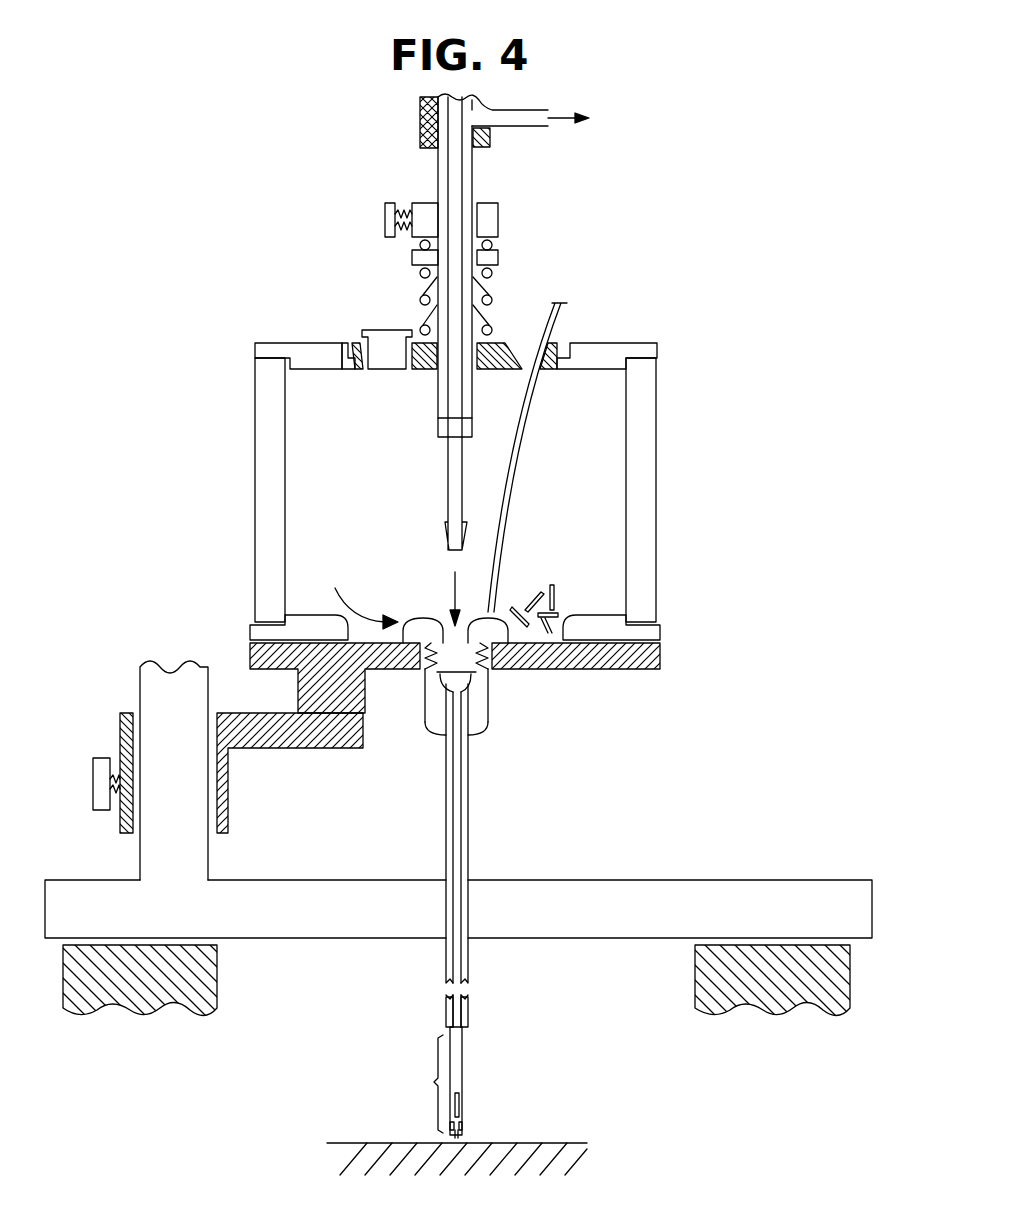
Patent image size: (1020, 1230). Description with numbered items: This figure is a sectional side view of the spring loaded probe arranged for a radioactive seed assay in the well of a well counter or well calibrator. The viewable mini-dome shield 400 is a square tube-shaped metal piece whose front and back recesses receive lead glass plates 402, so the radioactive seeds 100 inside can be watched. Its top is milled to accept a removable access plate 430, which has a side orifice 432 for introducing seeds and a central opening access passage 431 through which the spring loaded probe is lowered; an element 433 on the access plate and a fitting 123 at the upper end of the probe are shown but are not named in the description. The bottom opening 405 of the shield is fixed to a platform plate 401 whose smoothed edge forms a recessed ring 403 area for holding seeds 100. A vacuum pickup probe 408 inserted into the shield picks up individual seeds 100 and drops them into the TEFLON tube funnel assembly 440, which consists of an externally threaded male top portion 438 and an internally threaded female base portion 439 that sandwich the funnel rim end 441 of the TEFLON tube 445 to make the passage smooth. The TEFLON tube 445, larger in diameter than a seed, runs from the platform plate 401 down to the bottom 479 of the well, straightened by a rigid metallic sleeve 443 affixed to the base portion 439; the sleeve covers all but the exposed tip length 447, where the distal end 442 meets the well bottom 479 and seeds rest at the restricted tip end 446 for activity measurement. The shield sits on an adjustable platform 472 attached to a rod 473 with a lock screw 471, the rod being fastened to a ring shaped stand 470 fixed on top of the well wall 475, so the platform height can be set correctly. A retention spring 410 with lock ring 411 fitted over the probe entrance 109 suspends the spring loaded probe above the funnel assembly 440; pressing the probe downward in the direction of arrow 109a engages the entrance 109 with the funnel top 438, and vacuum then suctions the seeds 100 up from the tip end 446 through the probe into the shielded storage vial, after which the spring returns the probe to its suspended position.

The gas outlet fitting 123 is at (490, 136).
The lock ring 411 is at (498, 218).
The retention spring 410 is at (491, 272).
The cup 433 is at (390, 330).
The side orifice 432 is at (356, 343).
The removable access plate 430 is at (348, 350).
The central opening access passage 431 is at (498, 342).
The vacuum pickup probe 408 is at (557, 325).
The mini-dome shield 400 is at (255, 345).
The recessed ring 403 is at (572, 620).
The lead glass plates 402 is at (255, 488).
The probe entrance 109 is at (445, 536).
The arrow 109a is at (455, 580).
The bottom opening 405 is at (353, 593).
The radioactive seeds 100 is at (550, 585).
The platform plate 401 is at (660, 660).
The externally threaded male top portion 438 is at (490, 650).
The funnel rim end 441 is at (470, 680).
The TEFLON tube funnel assembly 440 is at (425, 735).
The internally threaded metal female base portion 439 is at (478, 725).
The TEFLON tube 445 is at (470, 797).
The metallic sleeve 443 is at (470, 848).
The distal end 442 is at (462, 1063).
The exposed tip length 447 is at (437, 1082).
The tip end 446 is at (465, 1130).
The bottom of well 479 is at (587, 1143).
The well wall 475 is at (217, 972).
The ring shaped stand 470 is at (650, 919).
The rod 473 is at (208, 850).
The adjustable platform 472 is at (230, 775).
The lock screw 471 is at (93, 785).